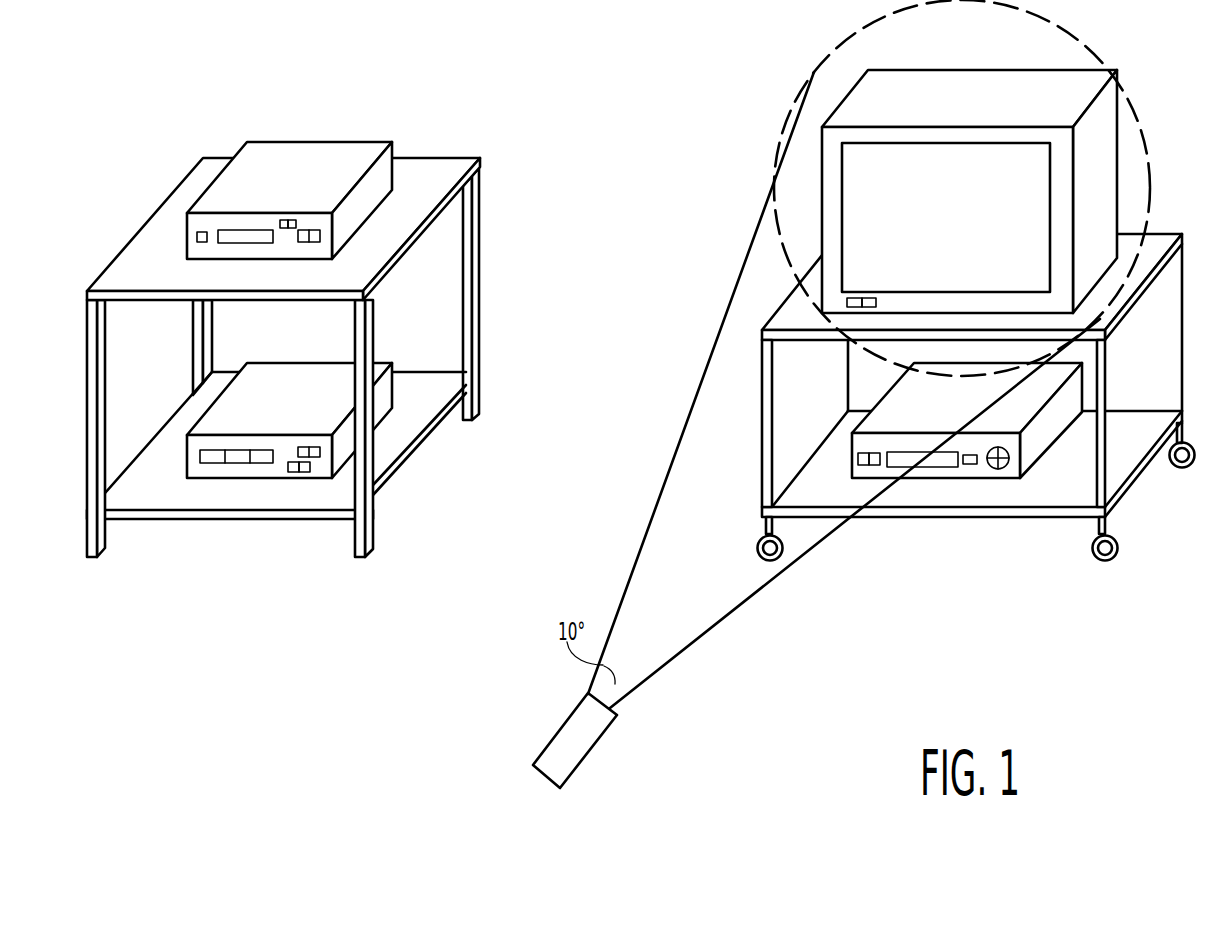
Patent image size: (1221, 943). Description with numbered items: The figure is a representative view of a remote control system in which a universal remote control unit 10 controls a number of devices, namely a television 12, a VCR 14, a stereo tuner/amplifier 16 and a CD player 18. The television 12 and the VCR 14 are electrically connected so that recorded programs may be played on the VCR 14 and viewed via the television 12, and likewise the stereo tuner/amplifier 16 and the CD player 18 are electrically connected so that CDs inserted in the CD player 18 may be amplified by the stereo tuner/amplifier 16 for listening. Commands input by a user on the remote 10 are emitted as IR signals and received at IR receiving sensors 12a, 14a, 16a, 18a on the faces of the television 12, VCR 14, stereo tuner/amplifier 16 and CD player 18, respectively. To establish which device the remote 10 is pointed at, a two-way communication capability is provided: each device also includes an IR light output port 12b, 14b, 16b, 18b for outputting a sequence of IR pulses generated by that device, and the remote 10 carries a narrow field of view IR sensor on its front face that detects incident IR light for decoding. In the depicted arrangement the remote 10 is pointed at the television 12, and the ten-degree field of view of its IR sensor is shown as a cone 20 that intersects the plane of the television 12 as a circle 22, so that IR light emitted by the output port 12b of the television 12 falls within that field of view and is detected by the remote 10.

The universal remote control unit 10 is at (595, 742).
The television 12 is at (1098, 208).
The IR receiving sensor 12a is at (852, 307).
The IR light output port 12b is at (868, 308).
The VCR 14 is at (1035, 440).
The IR receiving sensor 14a is at (863, 465).
The IR light output port 14b is at (873, 465).
The stereo tuner/amplifier 16 is at (382, 395).
The IR receiving sensor 16a is at (297, 472).
The IR light output port 16b is at (303, 472).
The CD player 18 is at (380, 177).
The IR receiving sensor 18a is at (283, 220).
The IR light output port 18b is at (293, 220).
The cone 20 is at (678, 437).
The circle 22 is at (840, 43).